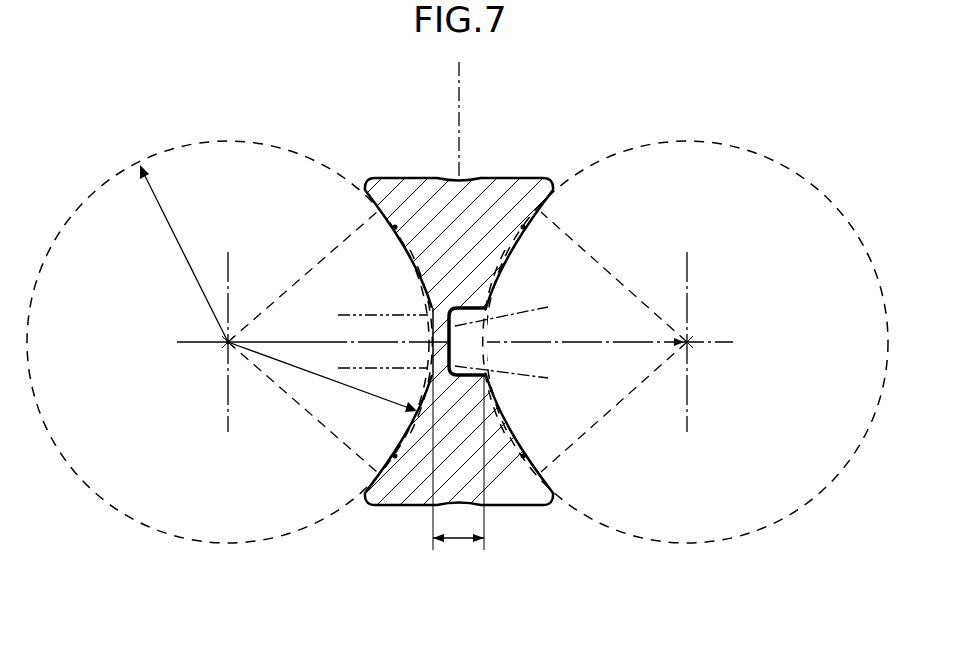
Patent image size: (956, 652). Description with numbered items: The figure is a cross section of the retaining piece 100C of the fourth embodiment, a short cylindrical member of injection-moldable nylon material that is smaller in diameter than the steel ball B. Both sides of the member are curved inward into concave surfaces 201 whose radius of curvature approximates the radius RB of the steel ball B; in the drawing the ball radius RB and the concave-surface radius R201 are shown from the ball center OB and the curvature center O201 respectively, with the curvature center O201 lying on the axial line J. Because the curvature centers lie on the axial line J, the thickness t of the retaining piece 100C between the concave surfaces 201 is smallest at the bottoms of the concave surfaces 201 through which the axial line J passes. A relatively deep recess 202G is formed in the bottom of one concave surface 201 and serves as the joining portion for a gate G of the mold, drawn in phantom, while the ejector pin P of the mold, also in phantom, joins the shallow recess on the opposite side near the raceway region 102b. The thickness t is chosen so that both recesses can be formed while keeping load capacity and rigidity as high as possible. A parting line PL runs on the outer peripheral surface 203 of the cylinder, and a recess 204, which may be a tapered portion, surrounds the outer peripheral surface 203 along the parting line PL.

The retaining piece 100C is at (398, 341).
The concave surface 201 is at (497, 281).
The deep recess 202G is at (470, 358).
The outer peripheral surface 203 is at (536, 179).
The recess 204 is at (448, 176).
The raceway 102b is at (428, 333).
The steel ball B is at (188, 140).
The gate G is at (528, 325).
The axial line J is at (689, 339).
The ejector pin P is at (366, 329).
The parting line PL is at (455, 80).
The thickness t is at (452, 546).
The radius of the steel ball RB is at (184, 253).
The surface radius R201 is at (322, 377).
The ball center OB is at (454, 353).
The curvature center of the concave surface O201 is at (260, 333).